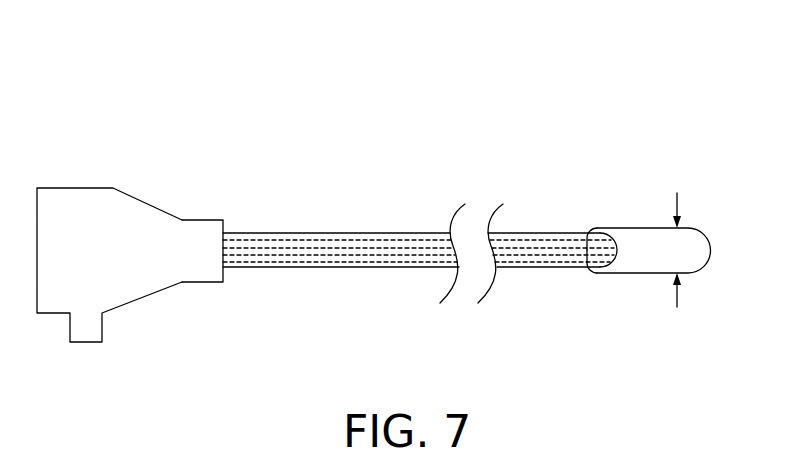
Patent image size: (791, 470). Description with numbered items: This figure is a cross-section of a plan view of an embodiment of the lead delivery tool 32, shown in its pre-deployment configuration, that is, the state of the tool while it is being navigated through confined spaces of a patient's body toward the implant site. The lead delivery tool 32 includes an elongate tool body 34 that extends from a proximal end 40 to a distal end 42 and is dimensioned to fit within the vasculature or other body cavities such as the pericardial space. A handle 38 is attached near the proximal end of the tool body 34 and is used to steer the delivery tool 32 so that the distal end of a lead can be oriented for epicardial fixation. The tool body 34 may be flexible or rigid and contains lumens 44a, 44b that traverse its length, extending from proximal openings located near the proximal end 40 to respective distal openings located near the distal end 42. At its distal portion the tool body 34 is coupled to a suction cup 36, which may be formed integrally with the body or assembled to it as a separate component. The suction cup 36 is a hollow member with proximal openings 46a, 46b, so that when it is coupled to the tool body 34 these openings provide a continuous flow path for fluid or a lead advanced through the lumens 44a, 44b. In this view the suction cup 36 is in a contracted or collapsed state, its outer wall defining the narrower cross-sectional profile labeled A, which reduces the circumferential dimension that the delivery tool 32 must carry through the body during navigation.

The lead delivery tool 32 is at (350, 92).
The tool body 34 is at (352, 268).
The suction cup 36 is at (710, 242).
The handle 38 is at (166, 310).
The proximal end 40 is at (231, 298).
The distal end 42 is at (595, 290).
The lumen 44a is at (350, 243).
The lumen 44b is at (398, 258).
The proximal opening 46a is at (626, 243).
The proximal opening 46b is at (626, 258).